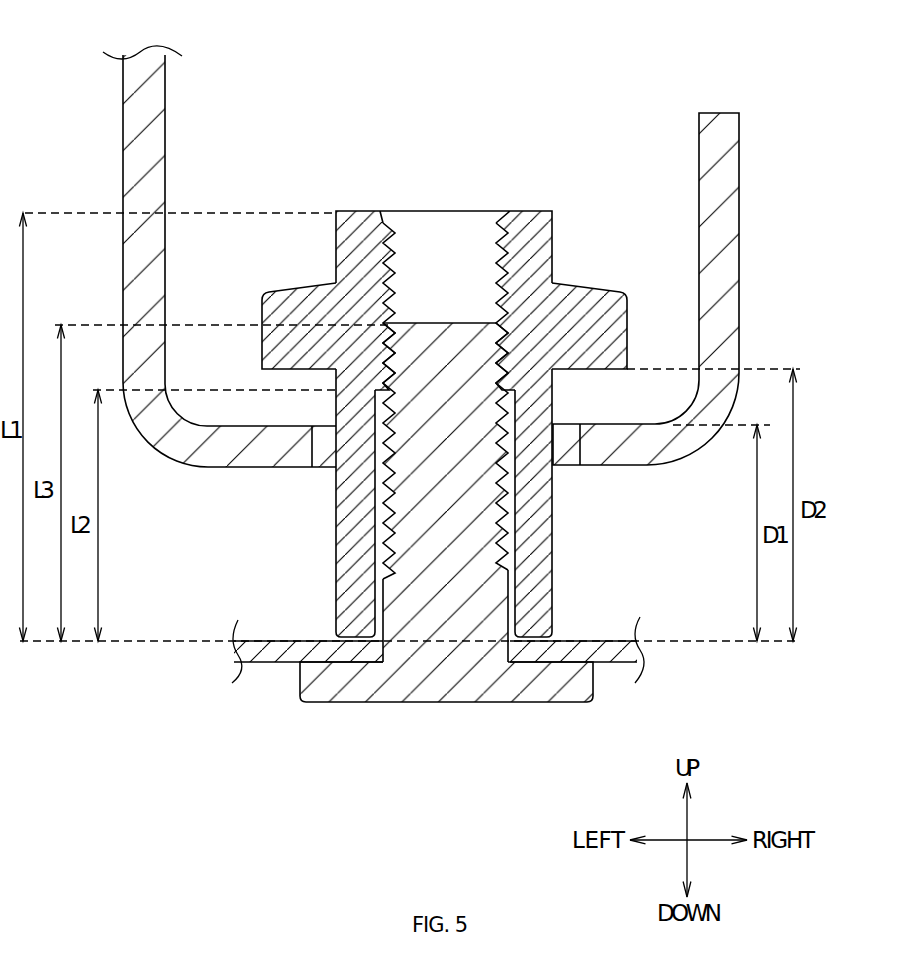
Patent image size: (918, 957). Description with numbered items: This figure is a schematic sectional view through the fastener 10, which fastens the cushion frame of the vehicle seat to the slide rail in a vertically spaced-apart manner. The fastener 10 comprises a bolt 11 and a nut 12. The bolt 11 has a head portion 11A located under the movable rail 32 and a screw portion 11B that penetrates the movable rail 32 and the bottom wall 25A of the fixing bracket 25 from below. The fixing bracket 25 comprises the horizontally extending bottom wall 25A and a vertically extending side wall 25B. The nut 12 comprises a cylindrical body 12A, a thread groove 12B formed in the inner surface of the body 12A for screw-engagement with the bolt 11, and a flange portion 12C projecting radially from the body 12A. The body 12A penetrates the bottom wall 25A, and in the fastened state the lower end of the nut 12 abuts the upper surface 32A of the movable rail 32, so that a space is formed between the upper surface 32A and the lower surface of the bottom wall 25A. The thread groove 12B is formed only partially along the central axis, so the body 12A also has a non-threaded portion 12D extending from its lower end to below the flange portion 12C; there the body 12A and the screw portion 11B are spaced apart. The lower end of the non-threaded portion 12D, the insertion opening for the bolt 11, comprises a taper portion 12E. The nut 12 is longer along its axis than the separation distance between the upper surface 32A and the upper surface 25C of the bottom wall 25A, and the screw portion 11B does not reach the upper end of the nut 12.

The fastener 10 is at (538, 94).
The bolt 11 is at (432, 720).
The head portion 11A is at (558, 702).
The screw portion 11B is at (428, 588).
The nut 12 is at (349, 209).
The body 12A is at (530, 240).
The thread groove 12B is at (497, 233).
The flange portion 12C is at (597, 321).
The non-threaded portion 12D is at (520, 535).
The taper portion 12E is at (348, 700).
The fixing bracket 25 is at (748, 200).
The bottom wall 25A is at (208, 467).
The side wall 25B is at (145, 140).
The upper surface 25C is at (287, 427).
The movable rail 32 is at (625, 652).
The upper surface 32A is at (588, 635).